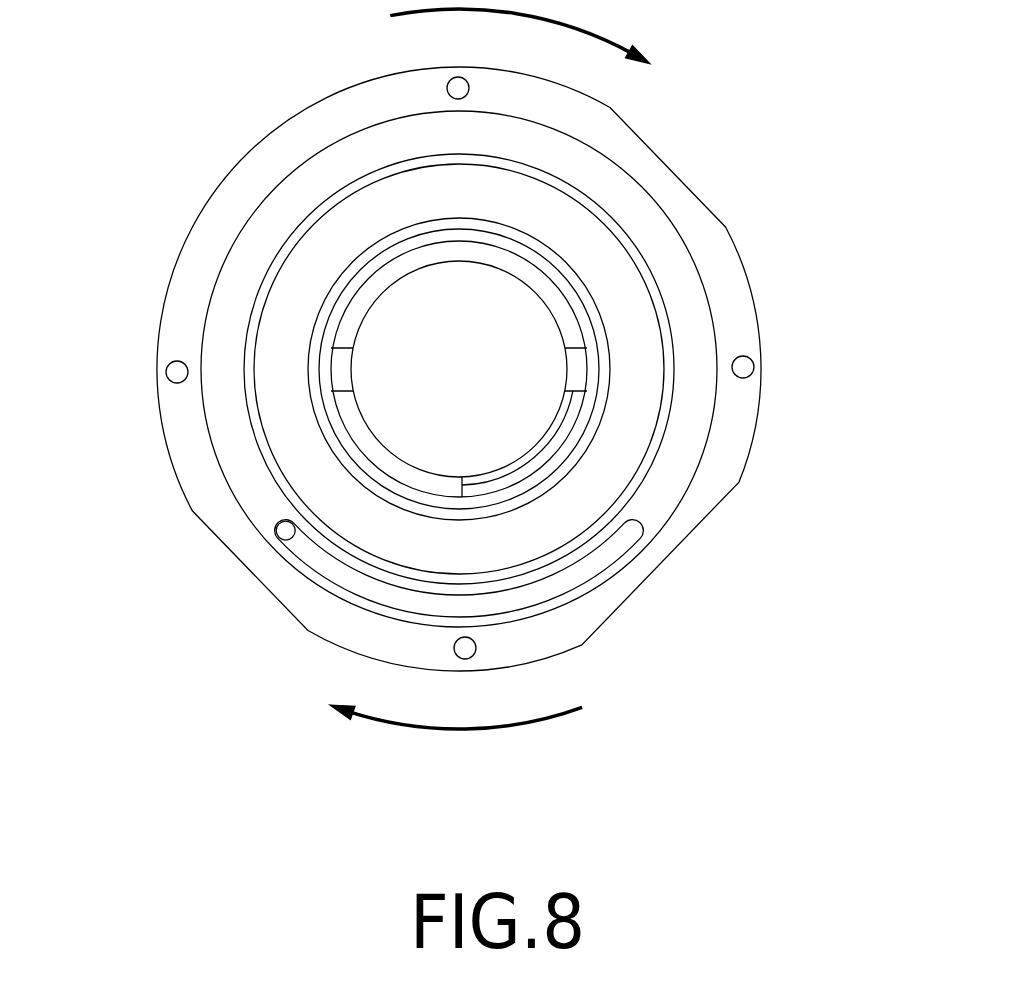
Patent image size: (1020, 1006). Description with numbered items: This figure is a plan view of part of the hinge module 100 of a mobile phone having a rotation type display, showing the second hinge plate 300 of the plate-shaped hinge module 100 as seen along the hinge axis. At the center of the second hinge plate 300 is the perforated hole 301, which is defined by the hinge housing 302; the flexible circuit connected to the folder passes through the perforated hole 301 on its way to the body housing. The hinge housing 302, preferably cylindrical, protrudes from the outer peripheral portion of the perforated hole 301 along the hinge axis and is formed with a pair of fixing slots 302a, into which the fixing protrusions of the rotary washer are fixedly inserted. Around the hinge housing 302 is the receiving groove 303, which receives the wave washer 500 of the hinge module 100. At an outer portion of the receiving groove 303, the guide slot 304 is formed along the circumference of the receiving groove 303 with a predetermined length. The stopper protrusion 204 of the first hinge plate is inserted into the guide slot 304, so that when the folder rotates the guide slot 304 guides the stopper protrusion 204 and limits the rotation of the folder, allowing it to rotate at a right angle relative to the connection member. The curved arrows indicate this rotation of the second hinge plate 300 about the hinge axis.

The hinge module 100 is at (137, 82).
The second hinge plate 300 is at (676, 158).
The hinge housing 302 is at (575, 292).
The fixing slots 302a is at (583, 358).
The wave washer 500 is at (673, 386).
The receiving groove 303 is at (665, 427).
The perforated hole 301 is at (537, 410).
The guide slot 304 is at (598, 565).
The stopper protrusion 204 is at (283, 527).